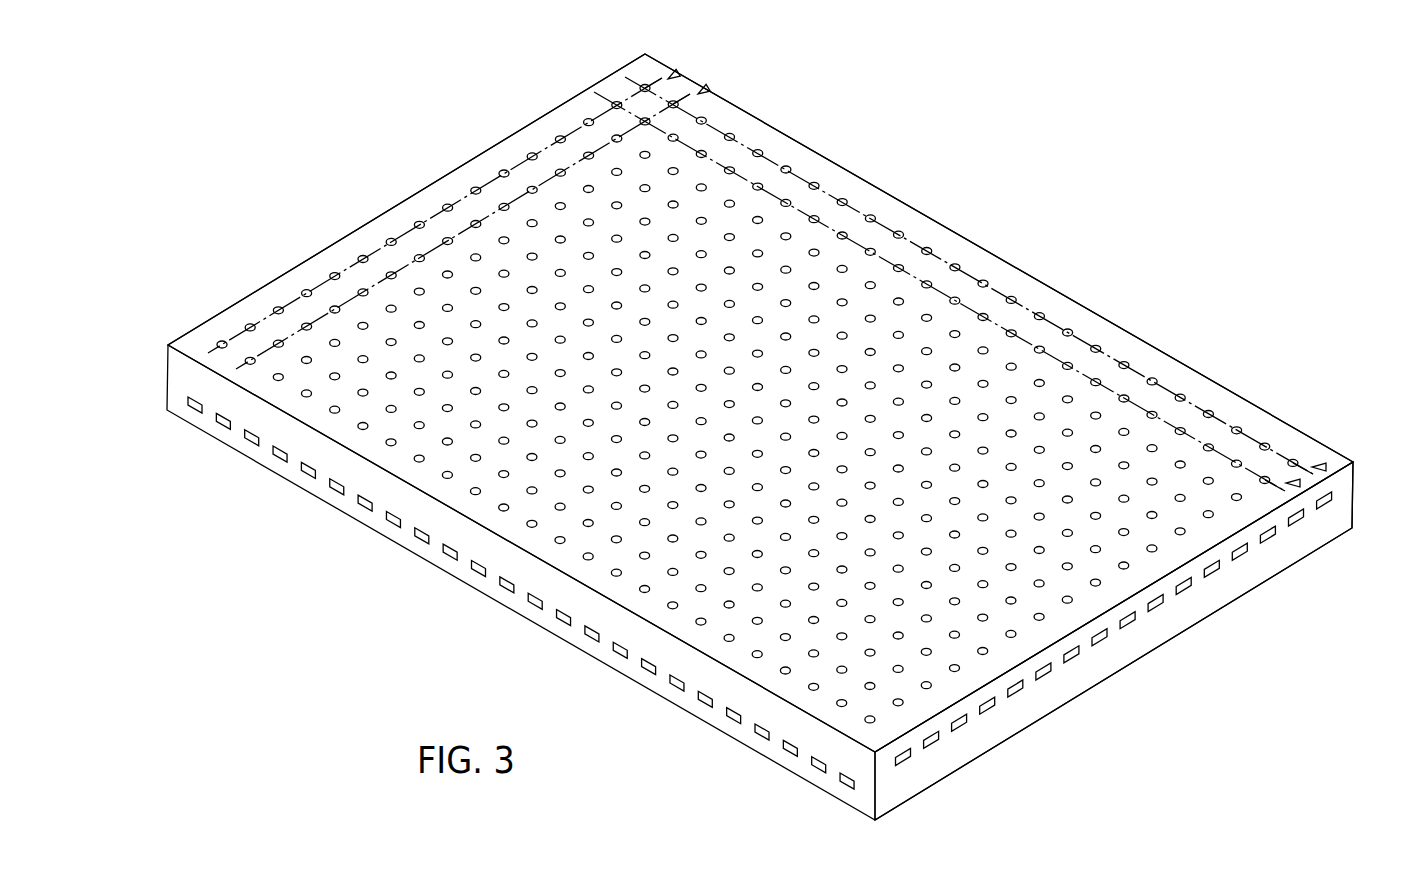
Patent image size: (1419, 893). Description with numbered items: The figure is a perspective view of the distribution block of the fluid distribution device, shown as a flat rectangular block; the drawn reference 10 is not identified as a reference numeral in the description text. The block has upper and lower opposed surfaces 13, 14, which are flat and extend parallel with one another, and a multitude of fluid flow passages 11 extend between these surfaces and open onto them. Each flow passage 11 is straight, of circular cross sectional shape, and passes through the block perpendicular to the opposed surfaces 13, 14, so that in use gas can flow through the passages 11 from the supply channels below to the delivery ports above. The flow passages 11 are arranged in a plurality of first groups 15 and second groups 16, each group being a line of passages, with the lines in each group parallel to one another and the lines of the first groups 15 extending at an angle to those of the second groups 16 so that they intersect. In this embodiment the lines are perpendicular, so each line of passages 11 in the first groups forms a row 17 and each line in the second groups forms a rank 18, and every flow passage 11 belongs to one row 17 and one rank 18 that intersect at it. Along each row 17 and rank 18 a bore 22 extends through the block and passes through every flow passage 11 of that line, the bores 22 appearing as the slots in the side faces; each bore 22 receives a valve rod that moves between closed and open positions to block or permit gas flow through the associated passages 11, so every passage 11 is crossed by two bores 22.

The perforated panel 10 is at (1070, 287).
The flow passage 11 is at (984, 284).
The upper surface 13 is at (1217, 395).
The lower surface 14 is at (1207, 620).
The first group 15 is at (1300, 483).
The second group 16 is at (710, 90).
The row 17 is at (1113, 359).
The rank 18 is at (568, 168).
The bore 22 is at (959, 731).